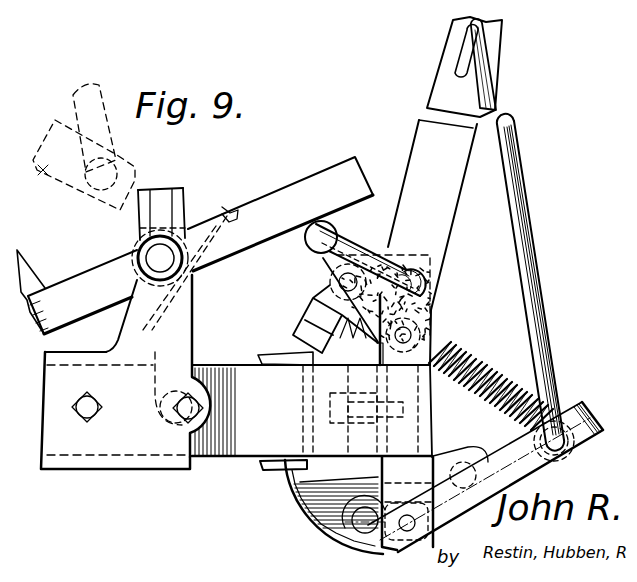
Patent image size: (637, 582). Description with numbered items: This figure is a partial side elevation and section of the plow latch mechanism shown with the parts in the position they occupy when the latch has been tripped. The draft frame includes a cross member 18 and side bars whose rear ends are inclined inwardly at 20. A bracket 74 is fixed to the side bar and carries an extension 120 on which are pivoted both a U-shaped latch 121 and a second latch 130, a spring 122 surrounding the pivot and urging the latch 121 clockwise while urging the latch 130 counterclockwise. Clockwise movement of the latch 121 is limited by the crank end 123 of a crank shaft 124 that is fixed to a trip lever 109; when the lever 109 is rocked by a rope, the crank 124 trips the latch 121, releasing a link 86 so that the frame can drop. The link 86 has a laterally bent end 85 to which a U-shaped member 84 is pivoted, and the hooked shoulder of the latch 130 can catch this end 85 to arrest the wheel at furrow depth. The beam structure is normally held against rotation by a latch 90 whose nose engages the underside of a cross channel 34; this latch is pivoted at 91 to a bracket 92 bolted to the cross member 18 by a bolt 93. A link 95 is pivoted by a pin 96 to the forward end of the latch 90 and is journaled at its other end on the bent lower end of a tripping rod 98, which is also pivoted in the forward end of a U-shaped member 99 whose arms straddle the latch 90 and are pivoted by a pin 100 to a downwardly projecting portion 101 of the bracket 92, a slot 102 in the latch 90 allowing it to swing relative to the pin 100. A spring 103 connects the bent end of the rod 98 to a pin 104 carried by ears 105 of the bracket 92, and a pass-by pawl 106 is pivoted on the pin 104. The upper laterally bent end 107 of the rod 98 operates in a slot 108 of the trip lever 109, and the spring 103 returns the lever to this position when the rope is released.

The cross member 18 is at (288, 472).
The inclined rear end of side bar 20 is at (228, 459).
The cross channel 34 is at (268, 355).
The bracket 74 is at (98, 464).
The U-shaped member 84 is at (18, 247).
The laterally bent end of link 85 is at (133, 158).
The link 86 is at (73, 102).
The latch 90 is at (305, 512).
The pivot 91 is at (433, 323).
The bracket 92 is at (434, 310).
The bolt 93 is at (313, 418).
The link 95 is at (505, 440).
The pin 96 is at (433, 525).
The tripping rod 98 is at (523, 174).
The U-shaped member 99 is at (584, 402).
The pin 100 is at (400, 537).
The downwardly projecting portion 101 is at (360, 543).
The slot 102 is at (332, 530).
The spring 103 is at (478, 367).
The pin 104 is at (326, 270).
The ears 105 is at (338, 283).
The pass-by pawl 106 is at (342, 299).
The laterally bent end of tripping rod 107 is at (469, 26).
The slot 108 is at (461, 58).
The trip lever 109 is at (435, 97).
The extension of bracket 120 is at (196, 323).
The U-shaped latch 121 is at (294, 196).
The spring 122 is at (229, 206).
The crank end 123 is at (363, 231).
The crank shaft 124 is at (420, 275).
The latch 130 is at (163, 198).